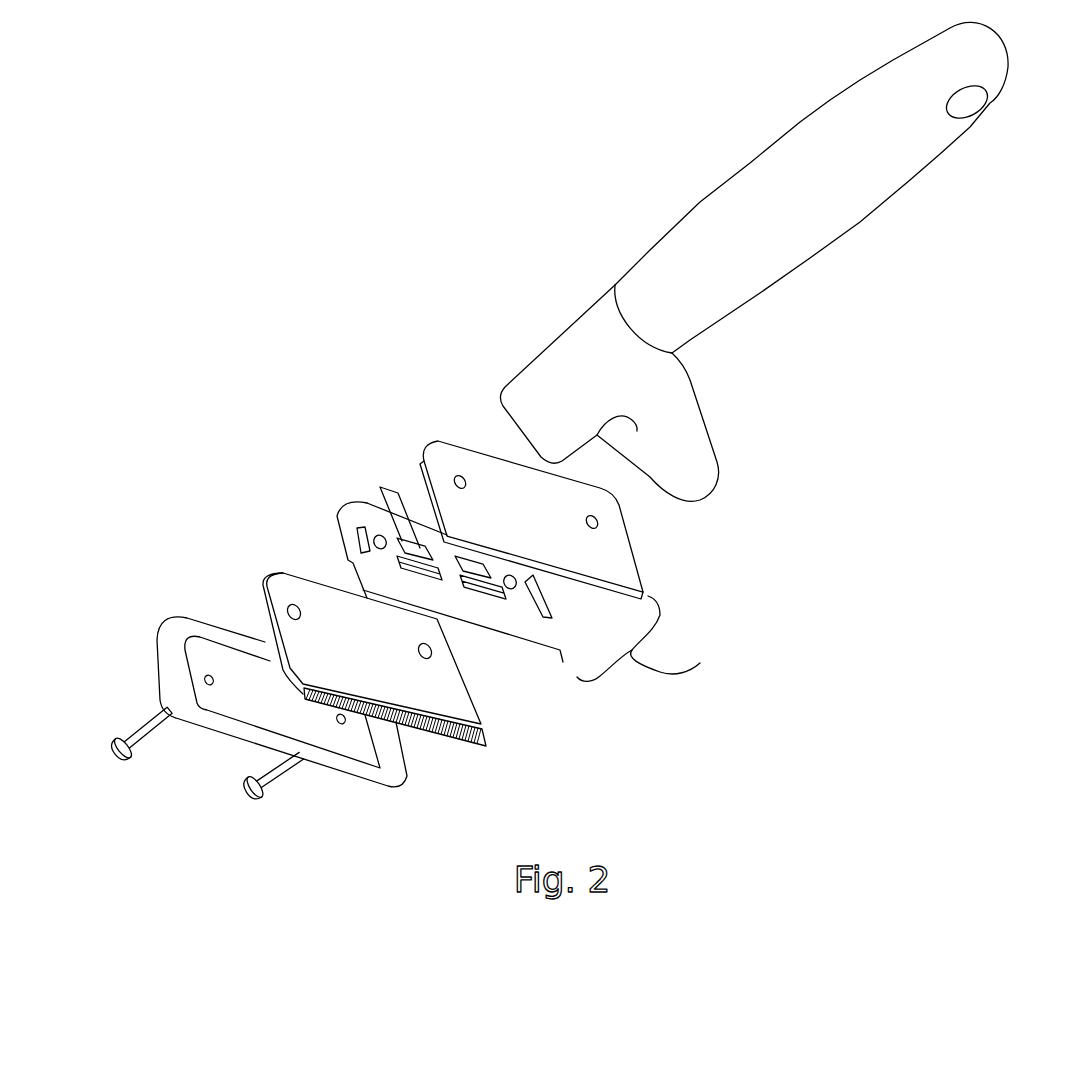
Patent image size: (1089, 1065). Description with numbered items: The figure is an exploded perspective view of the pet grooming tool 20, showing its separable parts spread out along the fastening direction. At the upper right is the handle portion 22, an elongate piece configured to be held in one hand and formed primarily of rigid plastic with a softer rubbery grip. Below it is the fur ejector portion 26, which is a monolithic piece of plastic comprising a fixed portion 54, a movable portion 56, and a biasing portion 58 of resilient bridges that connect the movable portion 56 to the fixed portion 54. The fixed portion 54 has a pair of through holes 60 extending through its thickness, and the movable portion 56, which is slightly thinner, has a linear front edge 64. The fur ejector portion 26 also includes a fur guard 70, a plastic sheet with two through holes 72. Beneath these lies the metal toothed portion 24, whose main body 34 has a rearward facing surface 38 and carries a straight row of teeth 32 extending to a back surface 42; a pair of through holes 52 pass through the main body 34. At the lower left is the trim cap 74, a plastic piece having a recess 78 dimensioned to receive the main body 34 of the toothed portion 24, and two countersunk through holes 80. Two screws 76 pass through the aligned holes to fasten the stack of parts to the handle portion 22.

The pet grooming tool 20 is at (325, 245).
The handle portion 22 is at (678, 393).
The toothed portion 24 is at (385, 677).
The fur ejector portion 26 is at (688, 672).
The teeth 32 is at (432, 761).
The main body 34 is at (305, 585).
The rearward facing surface 38 is at (336, 590).
The back surface 42 is at (487, 735).
The through holes 52 is at (307, 612).
The fixed portion 54 is at (454, 566).
The movable portion 56 is at (417, 495).
The biasing portion 58 is at (533, 625).
The through holes 60 is at (382, 536).
The front edge 64 is at (520, 612).
The fur guard 70 is at (569, 487).
The through holes 72 is at (461, 476).
The trim cap 74 is at (227, 746).
The screws 76 is at (118, 738).
The recess 78 is at (317, 737).
The countersunk through holes 80 is at (230, 662).